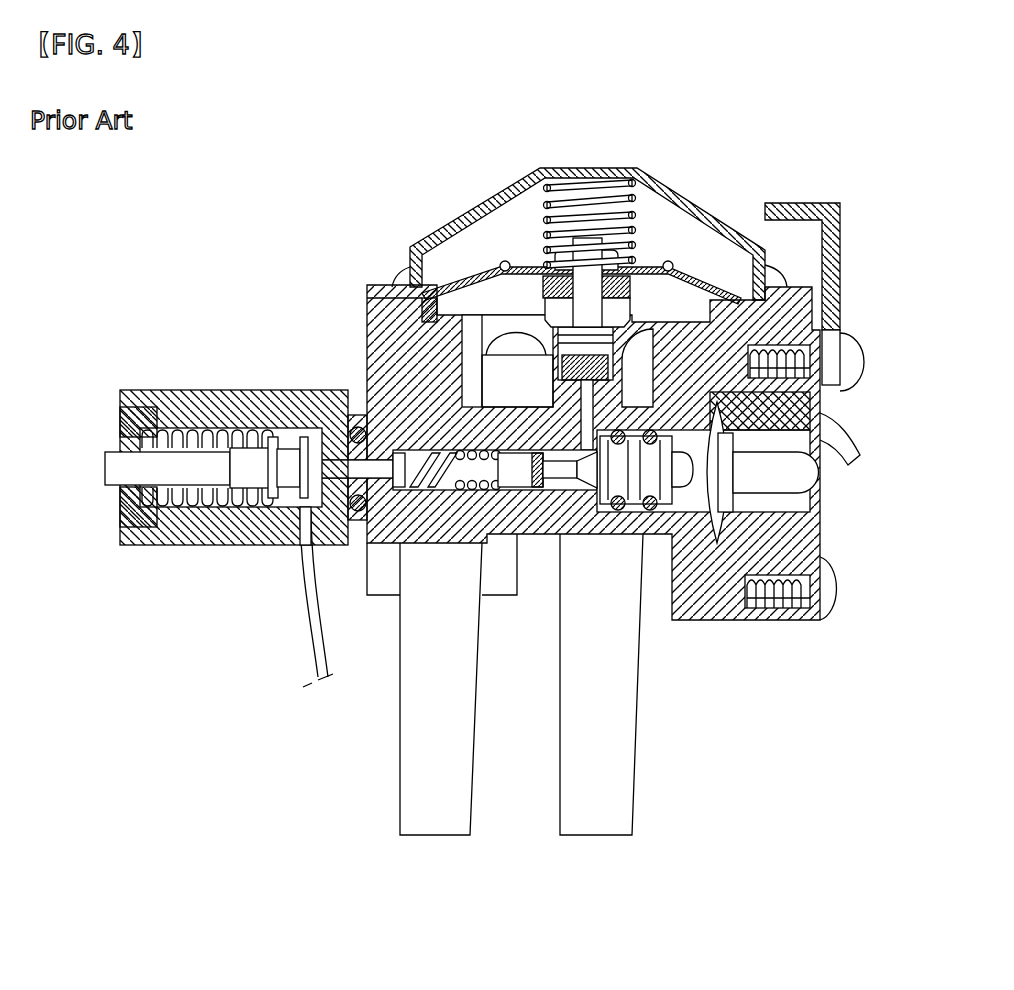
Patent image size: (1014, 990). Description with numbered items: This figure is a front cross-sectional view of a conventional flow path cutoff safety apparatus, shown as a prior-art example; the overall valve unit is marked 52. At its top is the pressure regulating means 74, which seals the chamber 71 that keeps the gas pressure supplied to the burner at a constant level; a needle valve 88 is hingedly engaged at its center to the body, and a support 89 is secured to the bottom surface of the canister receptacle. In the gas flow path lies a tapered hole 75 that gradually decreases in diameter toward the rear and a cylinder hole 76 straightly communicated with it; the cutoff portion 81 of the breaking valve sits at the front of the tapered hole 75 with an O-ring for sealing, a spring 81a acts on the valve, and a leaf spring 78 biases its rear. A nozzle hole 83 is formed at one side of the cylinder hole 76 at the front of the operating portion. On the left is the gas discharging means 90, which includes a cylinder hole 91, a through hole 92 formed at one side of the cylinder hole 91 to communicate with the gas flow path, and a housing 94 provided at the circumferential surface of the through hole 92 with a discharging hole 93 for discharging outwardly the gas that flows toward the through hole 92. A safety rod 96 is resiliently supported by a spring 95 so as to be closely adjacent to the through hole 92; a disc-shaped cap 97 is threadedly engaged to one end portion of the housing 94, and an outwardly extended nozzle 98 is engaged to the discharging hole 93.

The pressure regulating valve assembly 52 is at (599, 514).
The chamber 71 is at (475, 323).
The pressure regulating means 74 is at (675, 230).
The tapered hole 75 is at (517, 490).
The cylinder hole 76 is at (687, 500).
The leaf spring 78 is at (815, 422).
The cutoff portion 81 is at (578, 487).
The return spring 81a is at (432, 497).
The nozzle hole 83 is at (553, 398).
The needle valve 88 is at (551, 368).
The support 89 is at (460, 812).
The gas discharging means 90 is at (196, 505).
The cylinder hole 91 is at (191, 540).
The through hole 92 is at (376, 462).
The discharging hole 93 is at (290, 528).
The housing 94 is at (173, 392).
The spring 95 is at (248, 458).
The safety rod 96 is at (273, 437).
The disc-shaped cap 97 is at (118, 508).
The nozzle 98 is at (307, 633).